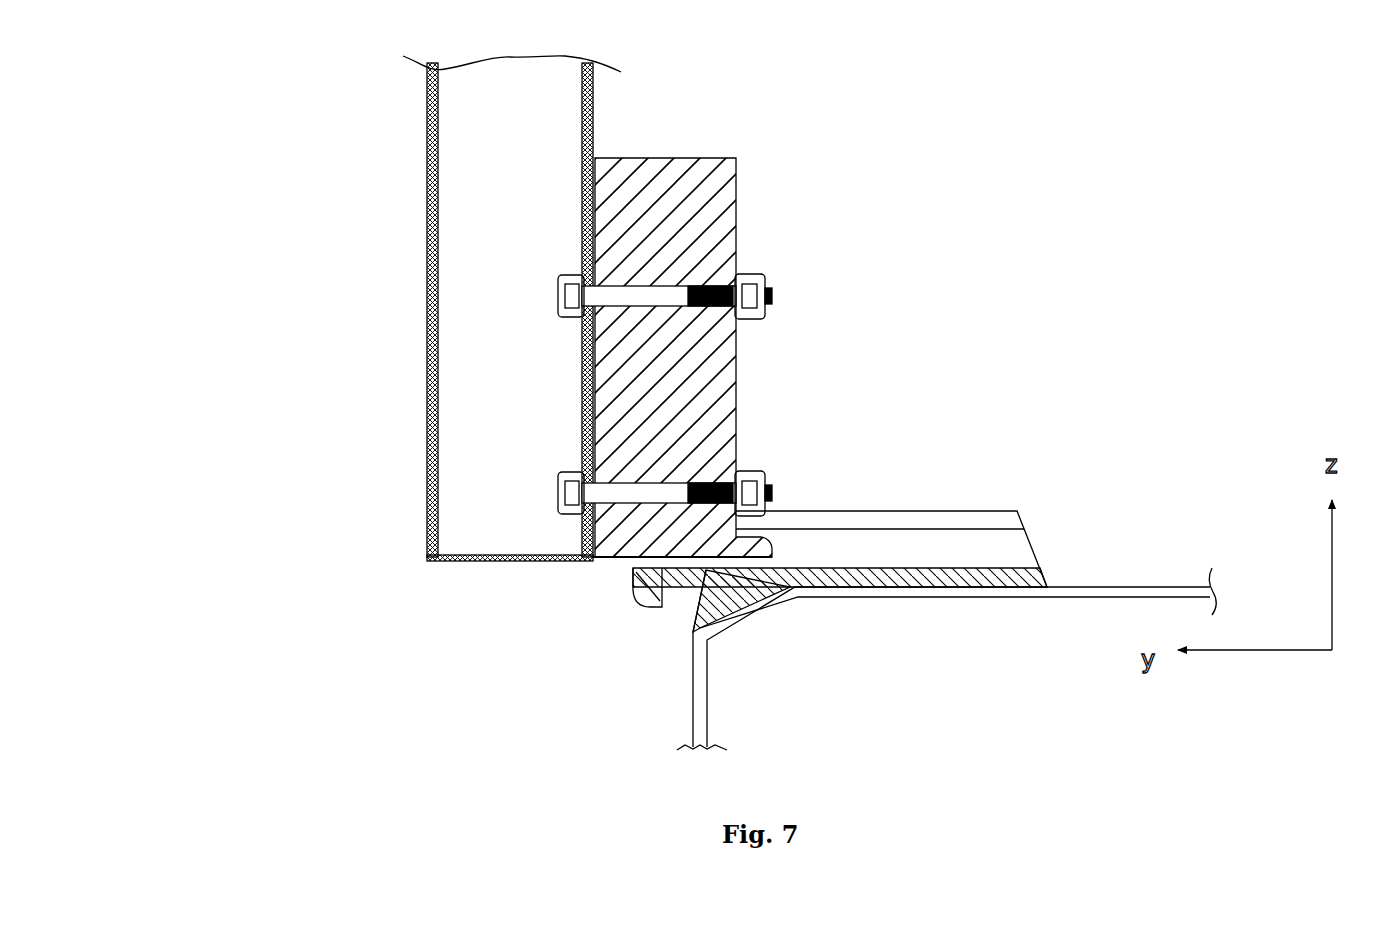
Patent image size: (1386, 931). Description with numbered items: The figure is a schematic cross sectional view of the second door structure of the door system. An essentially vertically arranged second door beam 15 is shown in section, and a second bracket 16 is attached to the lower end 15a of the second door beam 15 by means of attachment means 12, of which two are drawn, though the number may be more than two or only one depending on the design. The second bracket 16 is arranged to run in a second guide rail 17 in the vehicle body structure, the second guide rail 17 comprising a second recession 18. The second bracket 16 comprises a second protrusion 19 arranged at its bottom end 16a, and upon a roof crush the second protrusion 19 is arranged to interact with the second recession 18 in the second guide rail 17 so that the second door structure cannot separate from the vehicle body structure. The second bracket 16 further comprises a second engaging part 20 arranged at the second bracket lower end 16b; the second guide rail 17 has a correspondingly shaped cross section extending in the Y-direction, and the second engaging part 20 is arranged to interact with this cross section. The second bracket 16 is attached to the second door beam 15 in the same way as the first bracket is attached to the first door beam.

The second door beam 15 is at (258, 145).
The lower end of the second door beam 15a is at (427, 533).
The first attachment means 12 is at (558, 497).
The second bracket 16 is at (692, 158).
The bottom end of the second bracket 16a is at (702, 574).
The second engaging part 20 is at (840, 549).
The second bracket lower end 16b is at (618, 557).
The second guide rail 17 is at (860, 548).
The second recession 18 is at (676, 606).
The second protrusion 19 is at (702, 574).